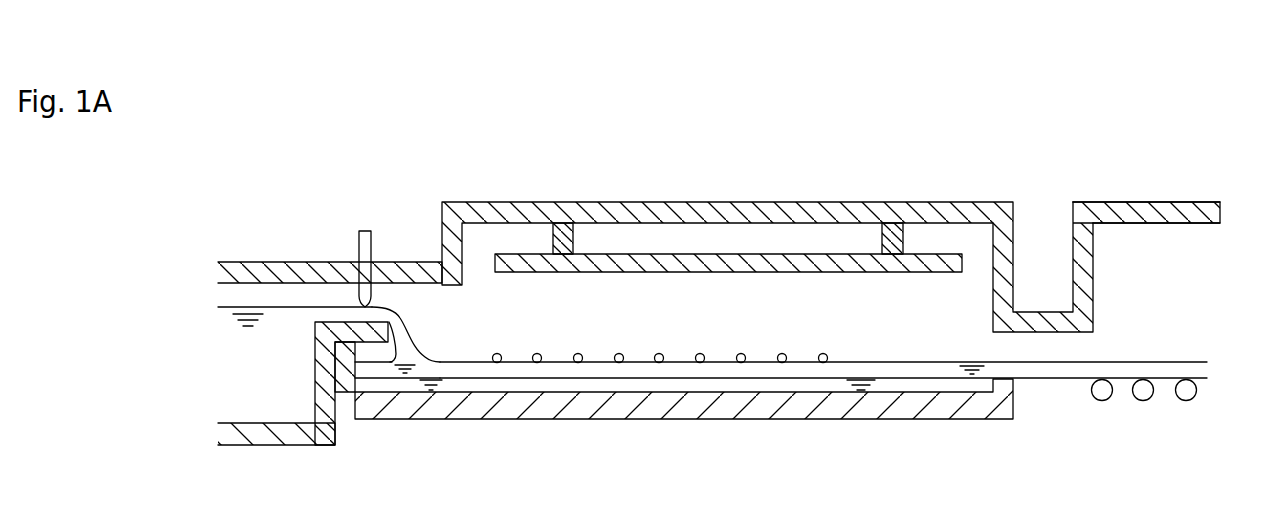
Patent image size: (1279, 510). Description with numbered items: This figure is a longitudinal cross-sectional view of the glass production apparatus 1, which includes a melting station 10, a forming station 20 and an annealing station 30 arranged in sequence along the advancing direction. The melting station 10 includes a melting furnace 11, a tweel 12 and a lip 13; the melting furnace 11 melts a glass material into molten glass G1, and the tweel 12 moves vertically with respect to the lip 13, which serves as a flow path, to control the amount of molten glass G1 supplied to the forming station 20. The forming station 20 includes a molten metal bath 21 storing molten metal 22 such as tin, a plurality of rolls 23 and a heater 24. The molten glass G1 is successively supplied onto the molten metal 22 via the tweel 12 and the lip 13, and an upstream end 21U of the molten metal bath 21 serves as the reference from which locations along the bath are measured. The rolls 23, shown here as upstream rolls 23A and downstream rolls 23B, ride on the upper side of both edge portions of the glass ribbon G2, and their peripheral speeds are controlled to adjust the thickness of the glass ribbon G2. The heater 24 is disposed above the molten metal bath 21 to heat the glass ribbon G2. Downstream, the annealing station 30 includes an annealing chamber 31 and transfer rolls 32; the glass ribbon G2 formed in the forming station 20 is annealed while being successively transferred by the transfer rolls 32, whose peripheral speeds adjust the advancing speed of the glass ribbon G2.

The glass production apparatus 1 is at (238, 175).
The melting station 10 is at (287, 205).
The melting furnace 11 is at (253, 262).
The tweel 12 is at (365, 230).
The lip 13 is at (388, 312).
The forming station 20 is at (554, 172).
The molten metal bath 21 is at (707, 420).
The upstream end 21U is at (352, 395).
The molten metal 22 is at (942, 380).
The rolls 23 is at (570, 346).
The upstream heaters 23A is at (497, 353).
The downstream heaters 23B is at (782, 353).
The heater 24 is at (732, 273).
The annealing station 30 is at (1104, 172).
The annealing chamber 31 is at (1155, 207).
The transfer rolls 32 is at (1102, 401).
The molten glass G1 is at (287, 322).
The glass ribbon G2 is at (897, 366).